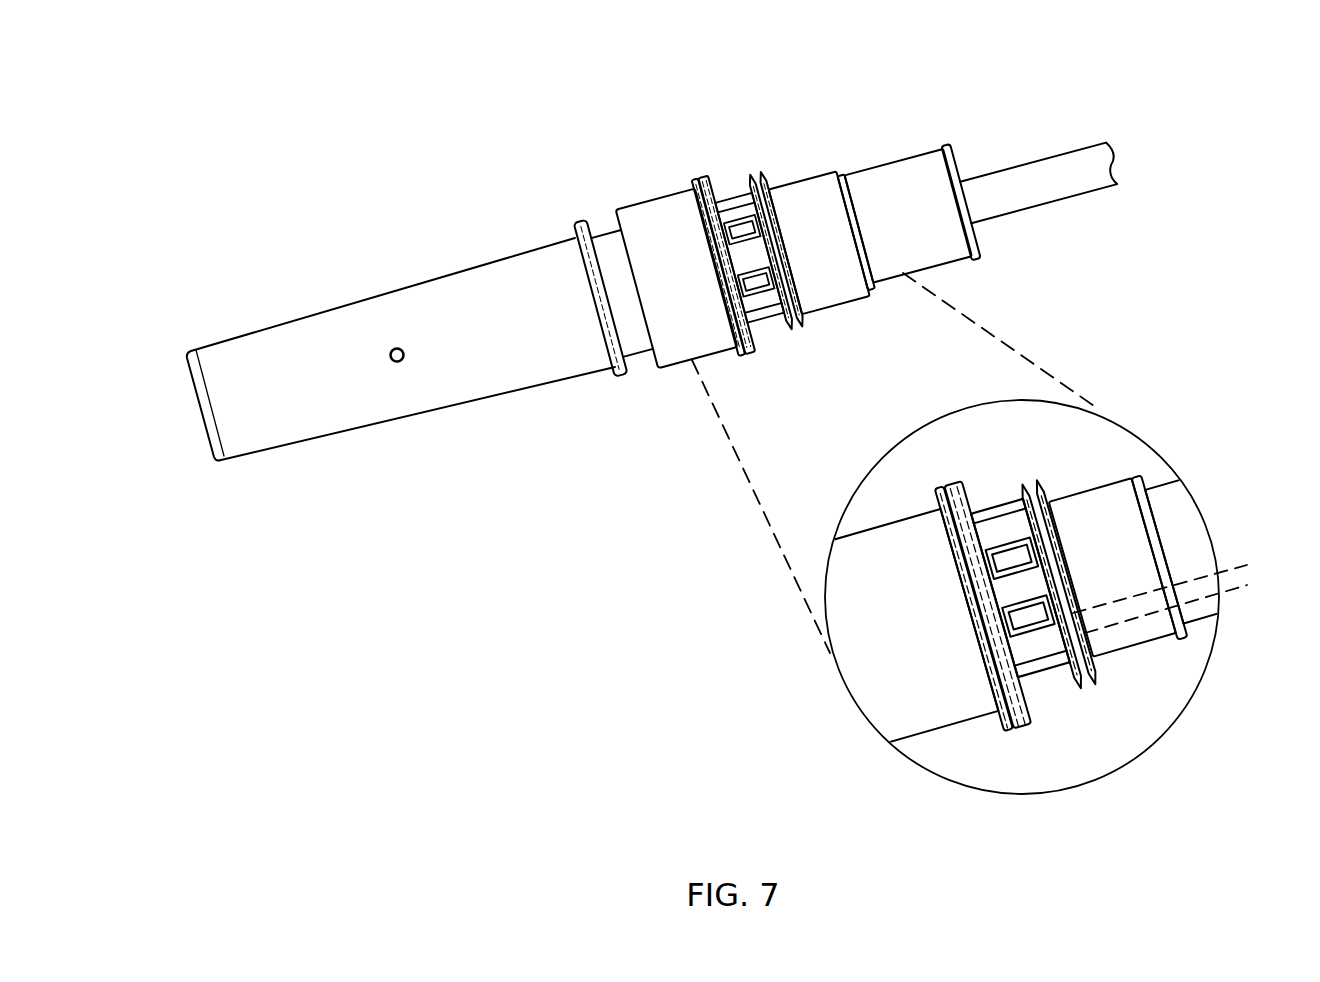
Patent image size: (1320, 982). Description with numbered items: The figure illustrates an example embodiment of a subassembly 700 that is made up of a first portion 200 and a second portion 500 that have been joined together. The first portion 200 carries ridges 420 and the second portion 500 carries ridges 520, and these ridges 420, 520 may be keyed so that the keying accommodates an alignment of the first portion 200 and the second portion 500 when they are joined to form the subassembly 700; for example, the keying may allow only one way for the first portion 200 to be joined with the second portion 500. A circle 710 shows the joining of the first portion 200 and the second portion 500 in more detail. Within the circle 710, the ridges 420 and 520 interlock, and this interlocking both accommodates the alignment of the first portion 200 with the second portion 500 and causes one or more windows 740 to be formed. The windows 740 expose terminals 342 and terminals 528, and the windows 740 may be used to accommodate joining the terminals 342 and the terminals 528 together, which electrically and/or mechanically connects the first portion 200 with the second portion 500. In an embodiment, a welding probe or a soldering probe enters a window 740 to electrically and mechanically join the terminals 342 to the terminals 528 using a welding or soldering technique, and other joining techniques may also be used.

The subassembly 700 is at (271, 84).
The first portion 200 is at (313, 413).
The second portion 500 is at (822, 207).
The circle 710 is at (1157, 452).
The ridges 420 is at (1020, 588).
The ridges 520 is at (1012, 558).
The terminals 528 is at (1028, 616).
The terminals 342 is at (1059, 584).
The windows 740 is at (1243, 545).